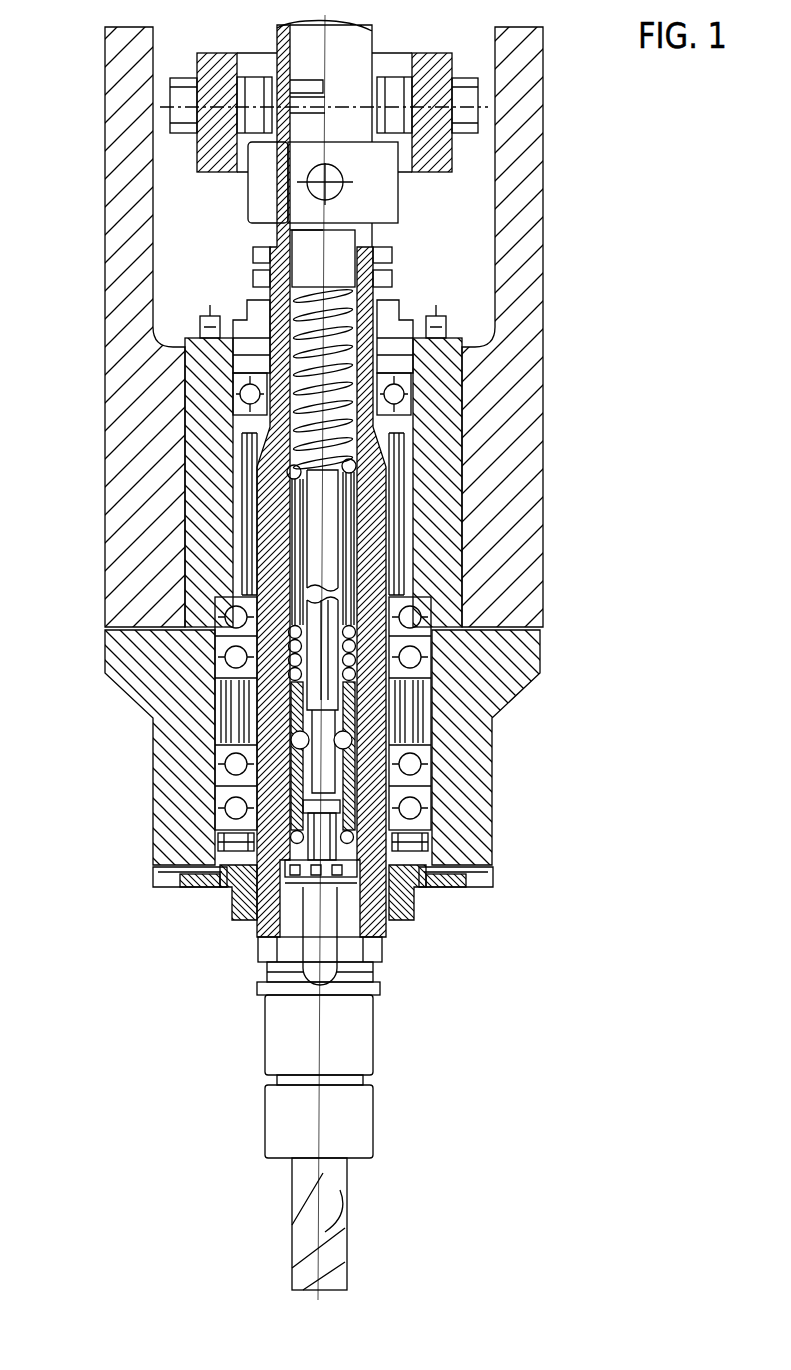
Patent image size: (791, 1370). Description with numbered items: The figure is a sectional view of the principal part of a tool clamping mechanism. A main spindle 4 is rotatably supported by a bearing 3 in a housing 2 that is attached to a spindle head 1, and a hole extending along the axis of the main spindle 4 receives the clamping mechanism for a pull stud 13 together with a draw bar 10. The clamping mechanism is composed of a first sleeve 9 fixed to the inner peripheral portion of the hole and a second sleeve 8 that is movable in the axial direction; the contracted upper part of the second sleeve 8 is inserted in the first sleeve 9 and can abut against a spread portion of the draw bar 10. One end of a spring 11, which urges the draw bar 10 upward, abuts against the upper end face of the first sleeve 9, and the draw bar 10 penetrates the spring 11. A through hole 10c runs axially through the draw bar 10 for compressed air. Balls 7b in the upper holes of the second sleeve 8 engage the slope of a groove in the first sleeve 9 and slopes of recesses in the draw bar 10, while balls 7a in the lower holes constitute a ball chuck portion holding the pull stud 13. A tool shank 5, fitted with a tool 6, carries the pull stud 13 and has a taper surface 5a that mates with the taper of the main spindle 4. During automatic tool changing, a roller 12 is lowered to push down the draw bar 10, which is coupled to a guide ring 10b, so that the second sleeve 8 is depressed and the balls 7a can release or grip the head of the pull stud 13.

The spindle head 1 is at (542, 565).
The housing 2 is at (455, 645).
The bearing 3 is at (490, 690).
The main spindle 4 is at (385, 878).
The tool shank 5 is at (352, 1047).
The taper surface 5a is at (343, 900).
The drill 6 is at (347, 1237).
The balls 7a is at (487, 872).
The balls 7b is at (358, 812).
The second sleeve 8 is at (355, 832).
The first sleeve 9 is at (367, 753).
The draw bar 10 is at (330, 500).
The guide ring 10b is at (388, 208).
The through hole 10c is at (298, 720).
The spring 11 is at (380, 371).
The roller 12 is at (397, 117).
The pull stud 13 is at (347, 797).